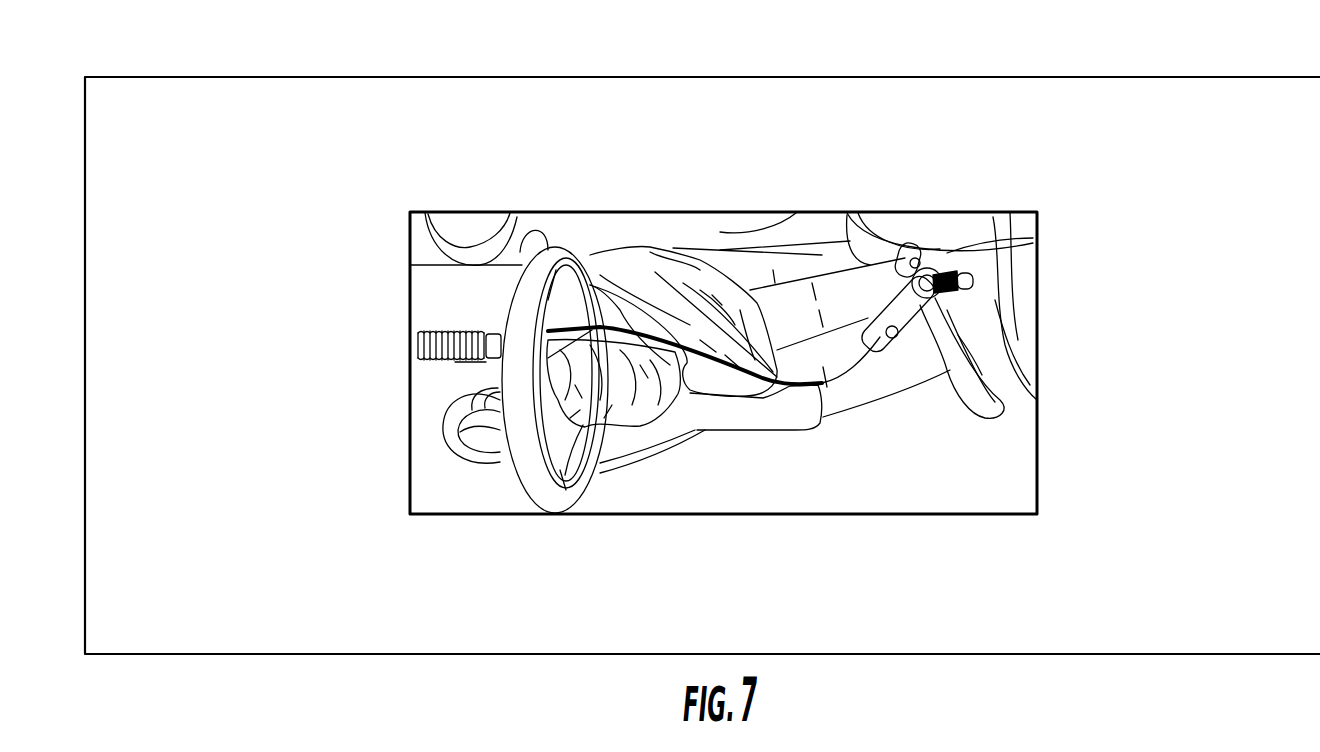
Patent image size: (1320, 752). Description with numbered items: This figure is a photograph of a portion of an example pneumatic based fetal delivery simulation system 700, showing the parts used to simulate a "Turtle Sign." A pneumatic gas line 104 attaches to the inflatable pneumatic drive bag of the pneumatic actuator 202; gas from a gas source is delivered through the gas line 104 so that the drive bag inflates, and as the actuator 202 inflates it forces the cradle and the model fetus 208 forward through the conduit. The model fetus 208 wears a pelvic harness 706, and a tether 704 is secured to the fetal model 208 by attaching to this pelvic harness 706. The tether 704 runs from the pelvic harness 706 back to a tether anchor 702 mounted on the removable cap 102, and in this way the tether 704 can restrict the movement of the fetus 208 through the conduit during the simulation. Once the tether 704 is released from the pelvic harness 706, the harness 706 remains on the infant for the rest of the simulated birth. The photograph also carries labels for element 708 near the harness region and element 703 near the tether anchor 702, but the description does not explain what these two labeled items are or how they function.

The ejection seat configuration 700 is at (854, 105).
The removable cap 102 is at (534, 277).
The pneumatic actuator 202 is at (635, 247).
The model fetus 208 is at (992, 248).
The bracket and bolt 708 is at (947, 273).
The pelvic harness 706 is at (955, 330).
The tether 704 is at (808, 396).
The tether anchor 702 is at (424, 333).
The spring end 703 is at (455, 362).
The pneumatic gas line 104 is at (455, 448).